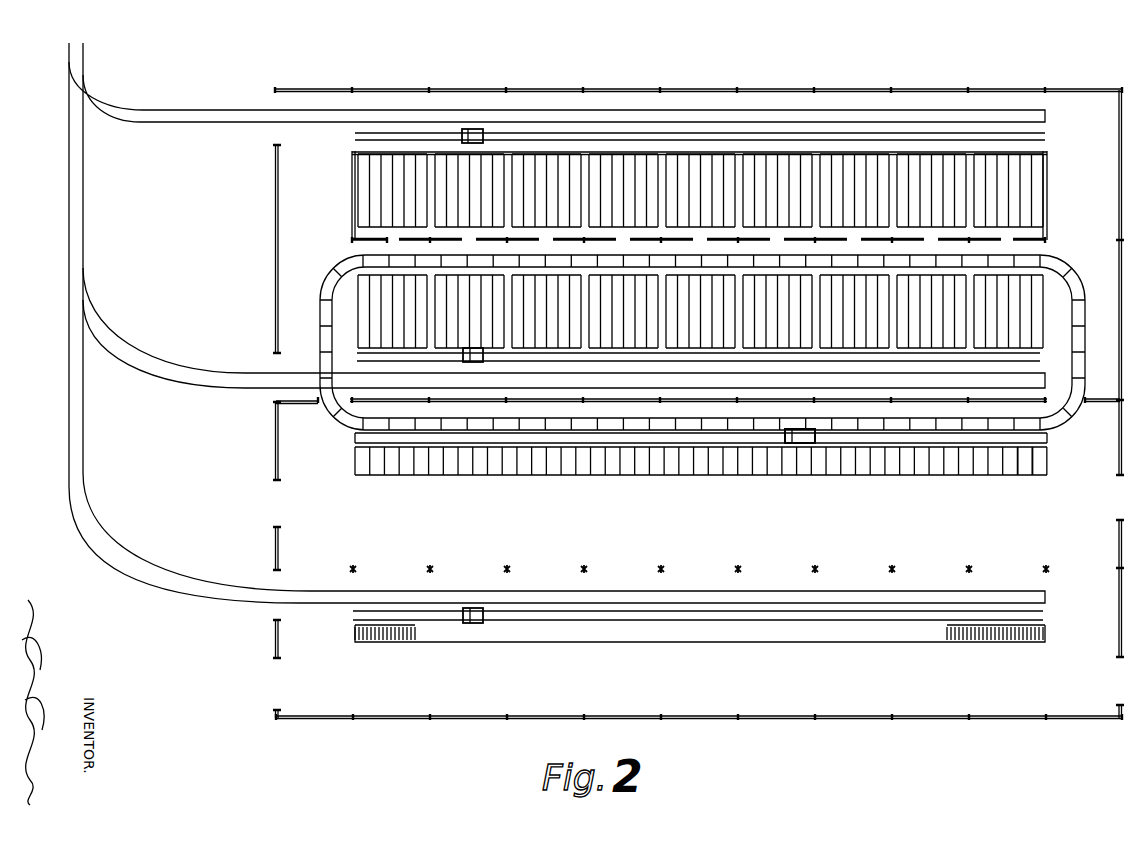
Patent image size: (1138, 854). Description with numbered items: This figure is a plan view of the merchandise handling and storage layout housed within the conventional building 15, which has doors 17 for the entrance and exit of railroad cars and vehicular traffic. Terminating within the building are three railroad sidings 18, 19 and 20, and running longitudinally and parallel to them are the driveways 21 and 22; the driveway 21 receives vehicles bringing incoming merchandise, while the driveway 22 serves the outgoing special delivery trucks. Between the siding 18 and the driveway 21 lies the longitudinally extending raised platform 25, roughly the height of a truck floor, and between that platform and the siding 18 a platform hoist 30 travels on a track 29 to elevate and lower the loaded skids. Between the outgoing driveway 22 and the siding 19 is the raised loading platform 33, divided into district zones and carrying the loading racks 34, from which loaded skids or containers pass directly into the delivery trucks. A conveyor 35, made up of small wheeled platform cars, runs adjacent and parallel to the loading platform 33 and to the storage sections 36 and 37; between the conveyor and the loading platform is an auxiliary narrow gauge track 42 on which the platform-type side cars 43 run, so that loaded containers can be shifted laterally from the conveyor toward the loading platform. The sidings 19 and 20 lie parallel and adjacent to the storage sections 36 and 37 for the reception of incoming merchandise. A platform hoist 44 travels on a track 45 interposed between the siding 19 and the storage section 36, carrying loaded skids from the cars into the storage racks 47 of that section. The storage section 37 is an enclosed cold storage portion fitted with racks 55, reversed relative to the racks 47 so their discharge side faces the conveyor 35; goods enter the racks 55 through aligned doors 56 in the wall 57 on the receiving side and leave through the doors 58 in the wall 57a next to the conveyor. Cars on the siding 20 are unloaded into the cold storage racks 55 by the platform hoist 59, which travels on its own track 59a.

The building 15 is at (1117, 195).
The doors 17 is at (278, 521).
The railroad siding 18 is at (308, 590).
The railroad siding 19 is at (285, 377).
The railroad siding 20 is at (233, 109).
The driveway 21 is at (345, 688).
The driveway 22 is at (352, 505).
The raised platform 25 is at (1047, 640).
The track 29 is at (1047, 617).
The platform hoist 30 is at (475, 623).
The loading platform 33 is at (1047, 465).
The loading racks 34 is at (1033, 470).
The conveyor 35 is at (330, 292).
The storage section 36 is at (1023, 325).
The storage section 37 is at (1018, 185).
The auxiliary narrow gauge track 42 is at (1047, 437).
The side cars 43 is at (806, 439).
The platform hoist 44 is at (473, 362).
The track 45 is at (355, 354).
The storage racks 47 is at (367, 292).
The racks 55 is at (370, 190).
The doors 56 is at (352, 151).
The wall 57 is at (352, 153).
The wall 57a is at (357, 245).
The doors 58 is at (385, 233).
The platform hoist 59 is at (473, 129).
The track 59a is at (1046, 136).